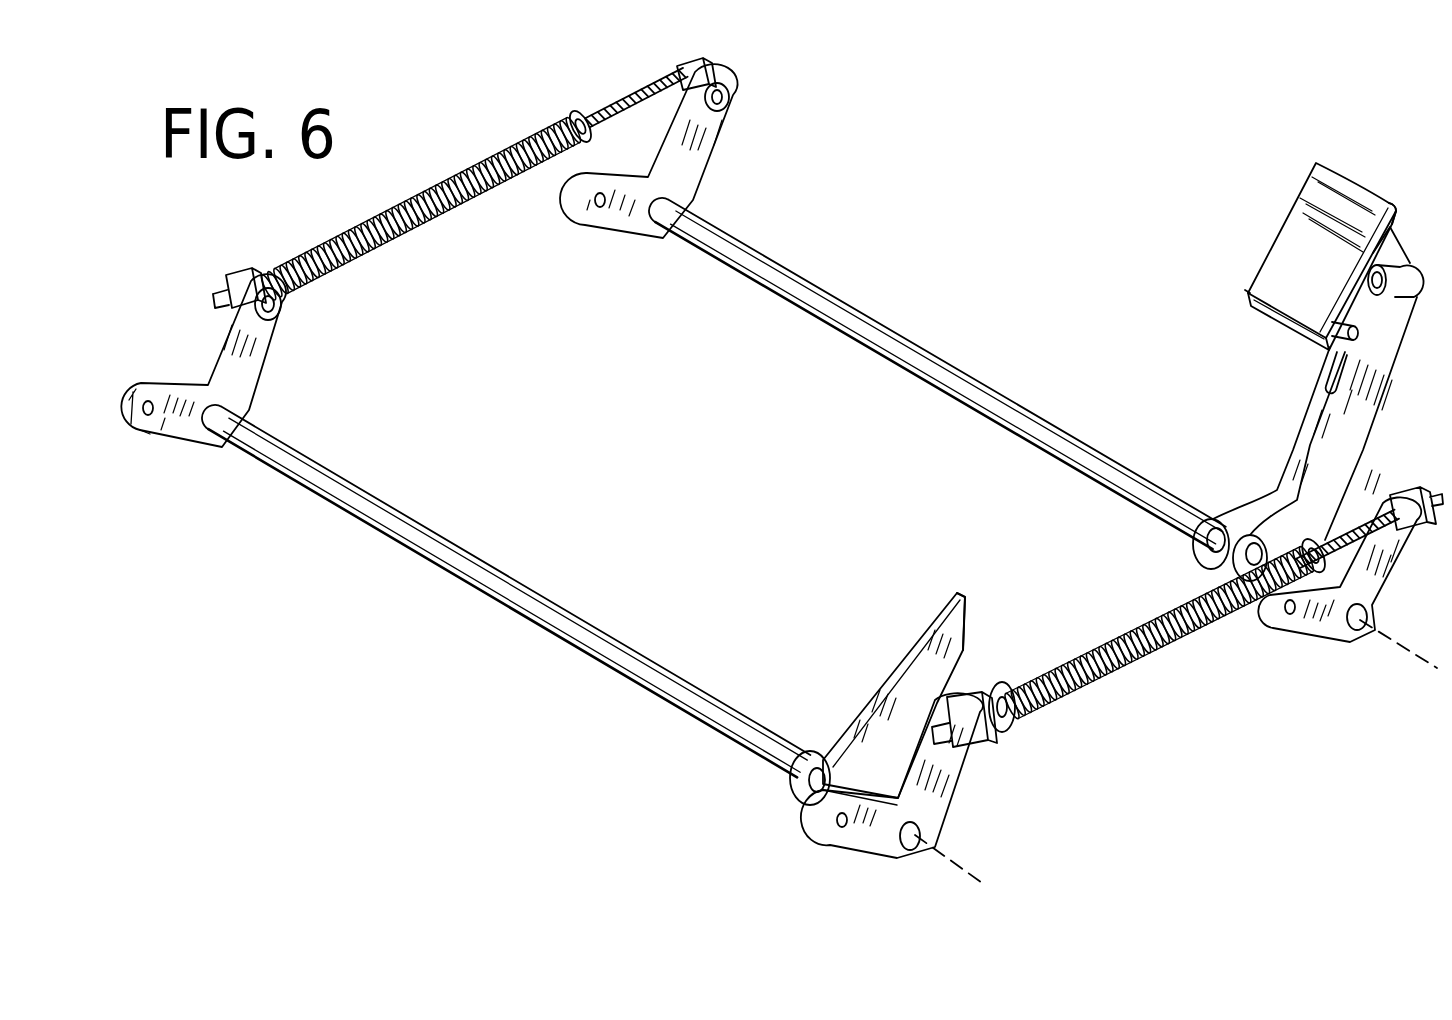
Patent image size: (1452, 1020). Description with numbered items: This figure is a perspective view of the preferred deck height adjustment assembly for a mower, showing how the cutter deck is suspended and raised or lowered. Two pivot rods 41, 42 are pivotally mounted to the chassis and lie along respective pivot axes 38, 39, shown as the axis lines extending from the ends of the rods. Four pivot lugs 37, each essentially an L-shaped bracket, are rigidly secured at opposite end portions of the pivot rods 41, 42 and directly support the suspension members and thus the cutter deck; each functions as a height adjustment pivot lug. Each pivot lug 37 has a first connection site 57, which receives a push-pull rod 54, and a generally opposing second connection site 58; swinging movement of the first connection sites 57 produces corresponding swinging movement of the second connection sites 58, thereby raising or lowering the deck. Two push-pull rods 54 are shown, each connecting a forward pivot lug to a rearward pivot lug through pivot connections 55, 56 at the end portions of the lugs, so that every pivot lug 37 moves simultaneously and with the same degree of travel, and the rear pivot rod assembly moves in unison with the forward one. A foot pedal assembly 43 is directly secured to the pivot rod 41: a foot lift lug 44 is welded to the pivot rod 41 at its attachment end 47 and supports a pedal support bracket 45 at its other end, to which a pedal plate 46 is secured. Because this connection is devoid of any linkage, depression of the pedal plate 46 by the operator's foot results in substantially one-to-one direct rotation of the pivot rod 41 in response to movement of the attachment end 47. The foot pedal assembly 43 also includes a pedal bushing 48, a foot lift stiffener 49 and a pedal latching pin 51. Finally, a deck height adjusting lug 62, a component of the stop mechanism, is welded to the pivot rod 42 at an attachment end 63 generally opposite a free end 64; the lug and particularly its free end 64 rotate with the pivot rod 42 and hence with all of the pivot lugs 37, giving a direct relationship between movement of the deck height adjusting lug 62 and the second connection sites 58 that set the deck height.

The pivot lug 37 is at (248, 392).
The pivot axis 38 is at (1420, 655).
The pivot axis 39 is at (985, 880).
The pivot rod 41 is at (846, 313).
The pivot rod 42 is at (440, 539).
The foot pedal assembly 43 is at (1198, 316).
The foot lift lug 44 is at (1368, 380).
The pedal support bracket 45 is at (1390, 237).
The pedal plate 46 is at (1285, 252).
The attachment end 47 is at (1242, 535).
The pedal bushing 48 is at (1384, 282).
The foot lift stiffener 49 is at (1340, 372).
The pedal latching pin 51 is at (1340, 325).
The push-pull rod 54 is at (432, 225).
The pivot connection 55 is at (700, 63).
The pivot connection 56 is at (283, 314).
The first connection site 57 is at (278, 287).
The second connection site 58 is at (152, 420).
The deck height adjusting lug 62 is at (915, 645).
The attachment end 63 is at (815, 765).
The free end 64 is at (958, 628).